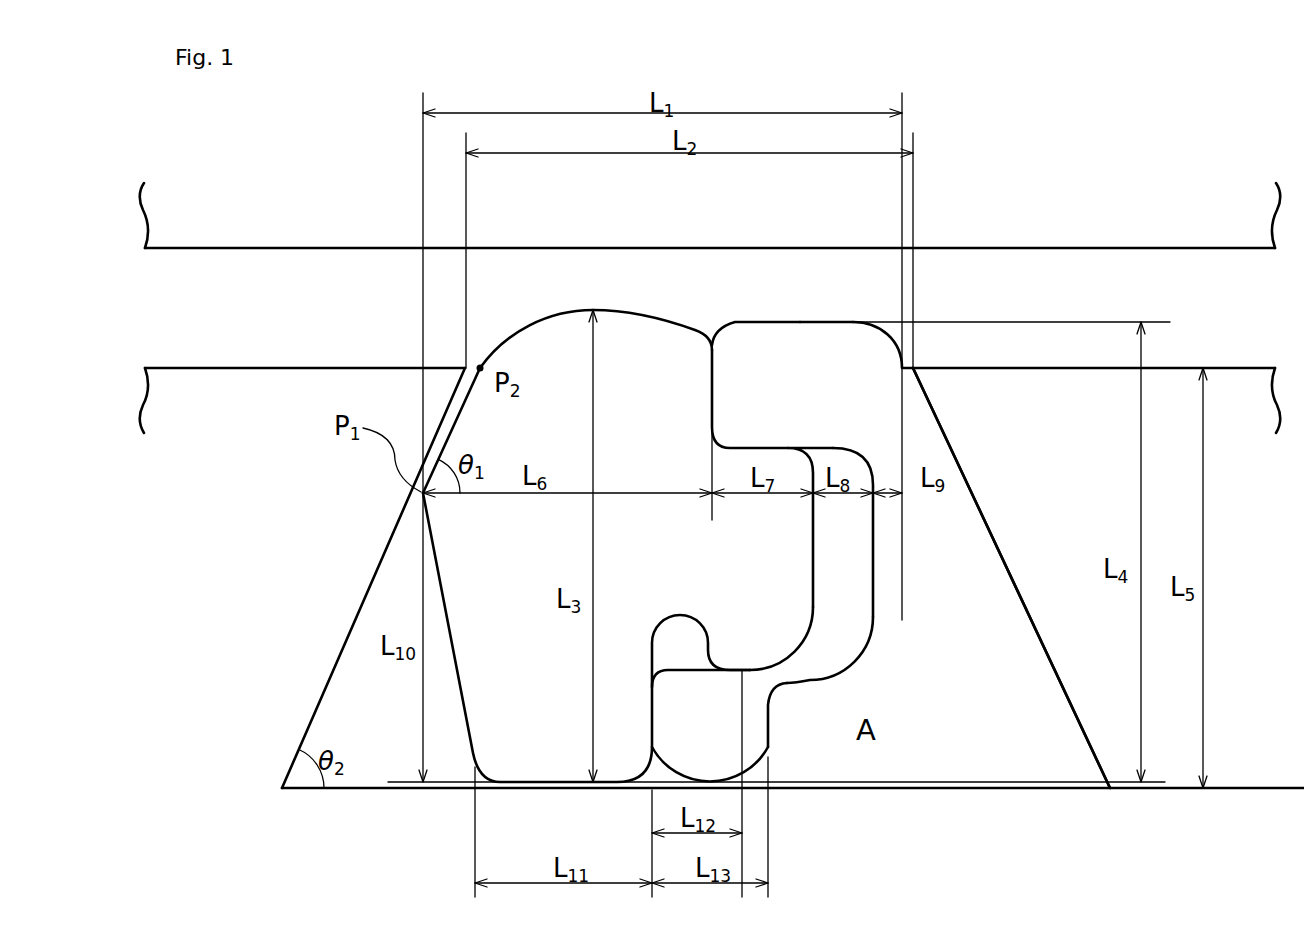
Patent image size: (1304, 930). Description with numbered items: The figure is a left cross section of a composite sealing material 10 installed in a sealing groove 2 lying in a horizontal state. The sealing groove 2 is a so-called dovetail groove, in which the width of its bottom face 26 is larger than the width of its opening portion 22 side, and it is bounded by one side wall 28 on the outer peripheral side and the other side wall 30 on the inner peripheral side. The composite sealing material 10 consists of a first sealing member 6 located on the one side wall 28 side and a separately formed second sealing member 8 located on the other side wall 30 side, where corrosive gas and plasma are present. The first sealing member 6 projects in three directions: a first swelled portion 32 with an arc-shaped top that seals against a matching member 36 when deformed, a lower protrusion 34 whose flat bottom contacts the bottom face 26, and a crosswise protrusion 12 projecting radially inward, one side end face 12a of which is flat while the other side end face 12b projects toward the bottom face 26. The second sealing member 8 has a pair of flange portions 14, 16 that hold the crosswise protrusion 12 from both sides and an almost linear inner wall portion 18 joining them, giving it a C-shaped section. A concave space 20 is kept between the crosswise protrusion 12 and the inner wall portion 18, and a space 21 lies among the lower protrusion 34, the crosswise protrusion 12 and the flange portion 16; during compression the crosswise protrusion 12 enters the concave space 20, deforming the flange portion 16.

The sealing groove 2 is at (1020, 608).
The first sealing member 6 is at (541, 360).
The second sealing member 8 is at (860, 363).
The composite sealing material 10 is at (776, 296).
The crosswise protrusion 12 is at (800, 566).
The one side end face of the crosswise protrusion 12a is at (745, 432).
The other side end face of the crosswise protrusion 12b is at (832, 676).
The flange portion 14 is at (760, 348).
The flange portion 16 is at (713, 752).
The inner wall portion 18 is at (890, 538).
The concave space 20 is at (856, 538).
The space 21 is at (697, 662).
The opening portion 22 is at (478, 366).
The bottom face 26 is at (953, 784).
The one side wall 28 is at (365, 612).
The other side wall 30 is at (958, 490).
The first swelled portion 32 is at (608, 338).
The lower protrusion 34 is at (567, 748).
The matching member 36 is at (268, 236).